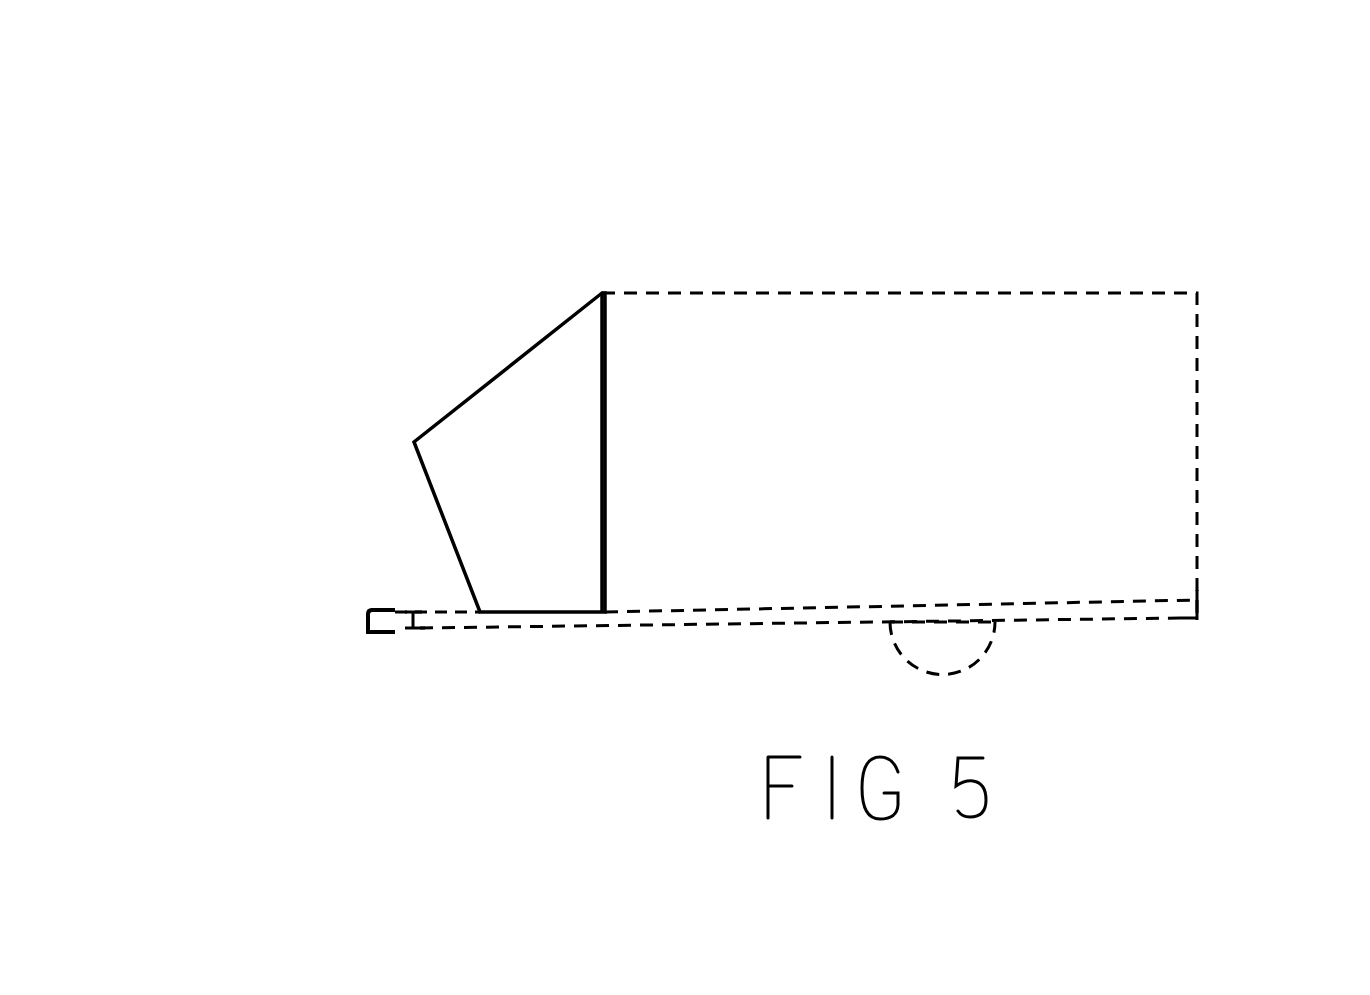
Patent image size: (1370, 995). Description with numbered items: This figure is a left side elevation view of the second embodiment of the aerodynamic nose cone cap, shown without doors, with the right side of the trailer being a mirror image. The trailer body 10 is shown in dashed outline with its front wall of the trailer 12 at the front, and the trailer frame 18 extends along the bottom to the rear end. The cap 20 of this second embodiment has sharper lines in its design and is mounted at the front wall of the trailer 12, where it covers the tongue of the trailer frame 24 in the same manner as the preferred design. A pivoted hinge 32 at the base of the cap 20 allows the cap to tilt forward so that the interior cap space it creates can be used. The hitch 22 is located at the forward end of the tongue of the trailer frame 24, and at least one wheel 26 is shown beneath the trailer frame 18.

The trailer body 10 is at (1073, 320).
The front wall of trailer 12 is at (606, 338).
The frame 18 is at (1203, 600).
The cap 20 is at (530, 388).
The hitch 22 is at (367, 604).
The tongue of frame 24 is at (441, 600).
The wheel 26 is at (995, 647).
The hinge 32 is at (480, 614).